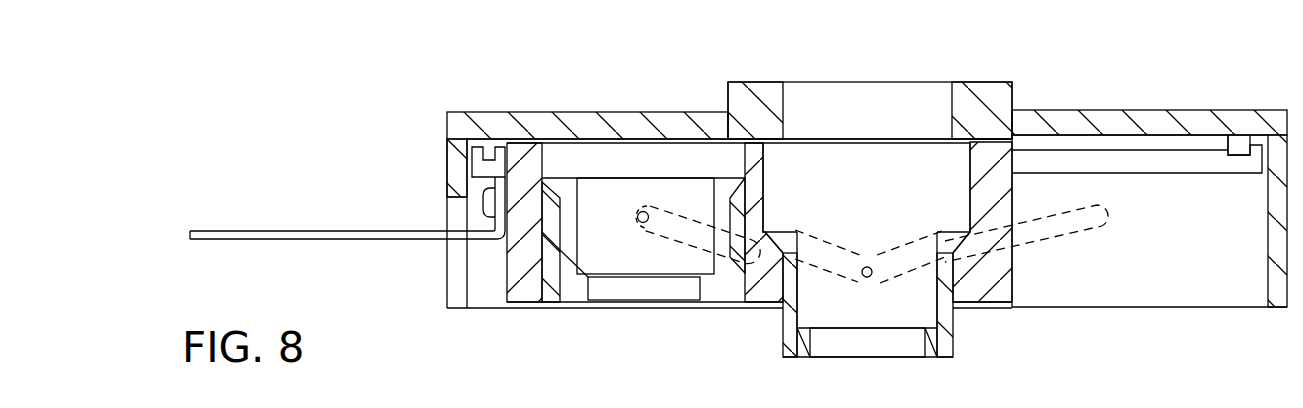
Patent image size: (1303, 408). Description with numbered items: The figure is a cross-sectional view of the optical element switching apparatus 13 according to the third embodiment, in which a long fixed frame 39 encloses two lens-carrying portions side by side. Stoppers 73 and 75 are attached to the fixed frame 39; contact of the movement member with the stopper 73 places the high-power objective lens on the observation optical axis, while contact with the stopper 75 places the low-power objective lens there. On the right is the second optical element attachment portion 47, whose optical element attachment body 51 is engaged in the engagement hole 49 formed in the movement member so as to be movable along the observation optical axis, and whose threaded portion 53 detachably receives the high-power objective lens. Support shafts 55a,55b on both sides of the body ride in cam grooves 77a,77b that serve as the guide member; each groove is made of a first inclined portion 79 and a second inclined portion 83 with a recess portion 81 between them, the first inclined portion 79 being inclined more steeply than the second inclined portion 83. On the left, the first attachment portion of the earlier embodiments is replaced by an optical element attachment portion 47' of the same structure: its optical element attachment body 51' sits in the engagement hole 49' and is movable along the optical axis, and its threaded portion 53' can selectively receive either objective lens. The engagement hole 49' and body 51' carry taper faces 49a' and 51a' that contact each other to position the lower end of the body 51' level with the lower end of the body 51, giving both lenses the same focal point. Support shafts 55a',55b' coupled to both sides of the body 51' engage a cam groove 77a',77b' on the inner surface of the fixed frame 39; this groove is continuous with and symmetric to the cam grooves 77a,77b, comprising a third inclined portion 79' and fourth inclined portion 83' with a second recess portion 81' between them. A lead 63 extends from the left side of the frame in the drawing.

The optical element switching apparatus 13 is at (993, 65).
The fixed frame 39 is at (1148, 110).
The second optical element attachment portion 47 is at (984, 320).
The optical element attachment portion 47' is at (493, 273).
The engagement hole 49 is at (870, 228).
The engagement hole 49' is at (637, 226).
The taper face 49a' is at (486, 275).
The optical element attachment body 51 is at (840, 317).
The optical element attachment body 51' is at (626, 122).
The taper face 51a' is at (458, 222).
The threaded portion 53 is at (862, 368).
The threaded portion 53' is at (631, 316).
The support shafts 55a,55b is at (862, 278).
The support shafts 55a',55b' is at (622, 141).
The lead terminal 63 is at (273, 231).
The stopper 73 is at (489, 150).
The stopper 75 is at (1238, 140).
The cam grooves 77a,77b is at (1070, 228).
The cam groove 77a',77b' is at (724, 146).
The first inclined portion 79 is at (912, 332).
The third inclined portion 79' is at (866, 198).
The recess portion 81 is at (994, 250).
The second recess portion 81' is at (742, 249).
The second inclined portion 83 is at (1140, 132).
The fourth inclined portion 83' is at (621, 299).